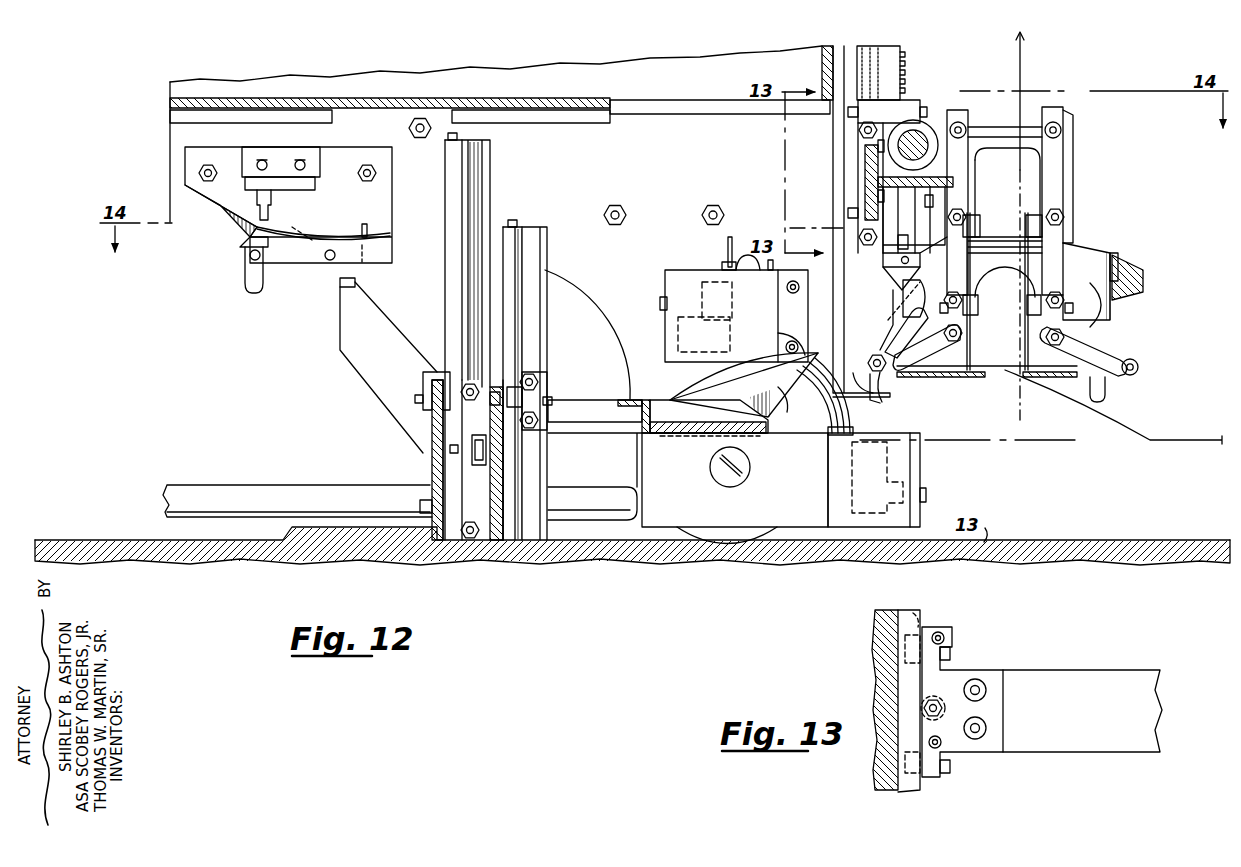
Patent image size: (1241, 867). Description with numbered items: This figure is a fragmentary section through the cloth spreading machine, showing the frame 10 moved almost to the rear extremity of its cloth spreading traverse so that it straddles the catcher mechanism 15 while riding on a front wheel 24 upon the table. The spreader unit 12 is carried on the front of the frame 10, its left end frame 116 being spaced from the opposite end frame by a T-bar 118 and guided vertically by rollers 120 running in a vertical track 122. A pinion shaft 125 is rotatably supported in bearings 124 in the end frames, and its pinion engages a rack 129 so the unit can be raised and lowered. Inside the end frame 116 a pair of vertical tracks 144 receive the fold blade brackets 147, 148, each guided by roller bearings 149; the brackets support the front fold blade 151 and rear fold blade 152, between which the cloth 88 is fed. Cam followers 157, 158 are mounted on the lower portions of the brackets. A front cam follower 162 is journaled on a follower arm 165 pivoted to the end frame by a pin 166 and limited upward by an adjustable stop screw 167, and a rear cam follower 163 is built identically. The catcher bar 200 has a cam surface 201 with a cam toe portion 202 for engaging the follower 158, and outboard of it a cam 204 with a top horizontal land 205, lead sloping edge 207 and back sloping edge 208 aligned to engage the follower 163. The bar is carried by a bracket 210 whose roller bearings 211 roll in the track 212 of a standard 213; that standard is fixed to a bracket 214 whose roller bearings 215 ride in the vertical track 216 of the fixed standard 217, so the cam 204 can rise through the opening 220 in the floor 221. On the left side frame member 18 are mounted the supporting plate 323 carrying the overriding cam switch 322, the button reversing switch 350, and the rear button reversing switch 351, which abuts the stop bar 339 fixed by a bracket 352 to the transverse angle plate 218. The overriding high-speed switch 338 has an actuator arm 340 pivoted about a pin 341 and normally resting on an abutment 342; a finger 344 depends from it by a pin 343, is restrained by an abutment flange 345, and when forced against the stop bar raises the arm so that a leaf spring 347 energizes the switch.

In FIG. 12, the frame 10 is at (509, 72).
In FIG. 12, the spreader unit 12 is at (1097, 233).
In FIG. 12, the catcher mechanism 15 is at (566, 385).
In FIG. 12, the frame member 18 is at (675, 180).
In FIG. 12, the front wheel 24 is at (712, 543).
In FIG. 12, the cloth 88 is at (1024, 69).
In FIG. 12, the end frame 116 is at (1074, 141).
In FIG. 12, the T-bar 118 is at (866, 170).
In FIG. 13, the T-bar 118 is at (1075, 731).
In FIG. 13, the rollers 120 is at (925, 628).
In FIG. 12, the vertical track 122 is at (893, 30).
In FIG. 13, the vertical track 122 is at (903, 678).
In FIG. 12, the bearings 124 is at (920, 134).
In FIG. 12, the pinion shaft 125 is at (928, 120).
In FIG. 12, the rack 129 is at (906, 68).
In FIG. 12, the vertical tracks 144 is at (1053, 113).
In FIG. 12, the fold blade bracket 147 is at (1088, 283).
In FIG. 12, the fold blade bracket 148 is at (962, 271).
In FIG. 12, the roller bearings 149 is at (982, 222).
In FIG. 12, the front fold blade 151 is at (1036, 378).
In FIG. 12, the rear fold blade 152 is at (976, 378).
In FIG. 12, the cam follower 157 is at (1139, 368).
In FIG. 12, the cam follower 158 is at (882, 390).
In FIG. 12, the front cam follower 162 is at (1105, 353).
In FIG. 12, the rear cam follower 163 is at (908, 371).
In FIG. 12, the follower arm 165 is at (1075, 380).
In FIG. 12, the pin 166 is at (1045, 336).
In FIG. 12, the adjustable stop screw 167 is at (928, 302).
In FIG. 12, the catcher bar 200 is at (656, 436).
In FIG. 12, the cam surface 201 is at (672, 400).
In FIG. 12, the cam toe portion 202 is at (744, 377).
In FIG. 12, the cam 204 is at (782, 387).
In FIG. 12, the top horizontal land 205 is at (790, 338).
In FIG. 12, the lead sloping edge 207 is at (780, 405).
In FIG. 12, the back sloping edge 208 is at (745, 370).
In FIG. 12, the bracket 210 is at (586, 426).
In FIG. 12, the roller bearings 211 is at (520, 376).
In FIG. 12, the track 212 is at (545, 240).
In FIG. 12, the standard 213 is at (520, 228).
In FIG. 12, the bracket 214 is at (494, 542).
In FIG. 12, the roller bearings 215 is at (478, 468).
In FIG. 12, the vertical track 216 is at (484, 186).
In FIG. 12, the standard 217 is at (448, 186).
In FIG. 12, the transverse angle plate 218 is at (430, 470).
In FIG. 12, the opening 220 is at (628, 101).
In FIG. 12, the floor 221 is at (440, 102).
In FIG. 12, the overriding cam switch 322 is at (1112, 254).
In FIG. 12, the supporting arm or plate 323 is at (1141, 278).
In FIG. 12, the overriding high-speed switch 338 is at (278, 183).
In FIG. 12, the stop bar 339 is at (357, 283).
In FIG. 12, the actuator arm 340 is at (289, 262).
In FIG. 12, the pin 341 is at (330, 260).
In FIG. 12, the abutment 342 is at (376, 208).
In FIG. 12, the pin 343 is at (244, 262).
In FIG. 12, the finger 344 is at (250, 284).
In FIG. 12, the abutment flange 345 is at (240, 251).
In FIG. 12, the leaf spring 347 is at (276, 228).
In FIG. 12, the button reversing switch 350 is at (927, 492).
In FIG. 12, the rear button reversing switch 351 is at (660, 304).
In FIG. 12, the bracket 352 is at (430, 380).